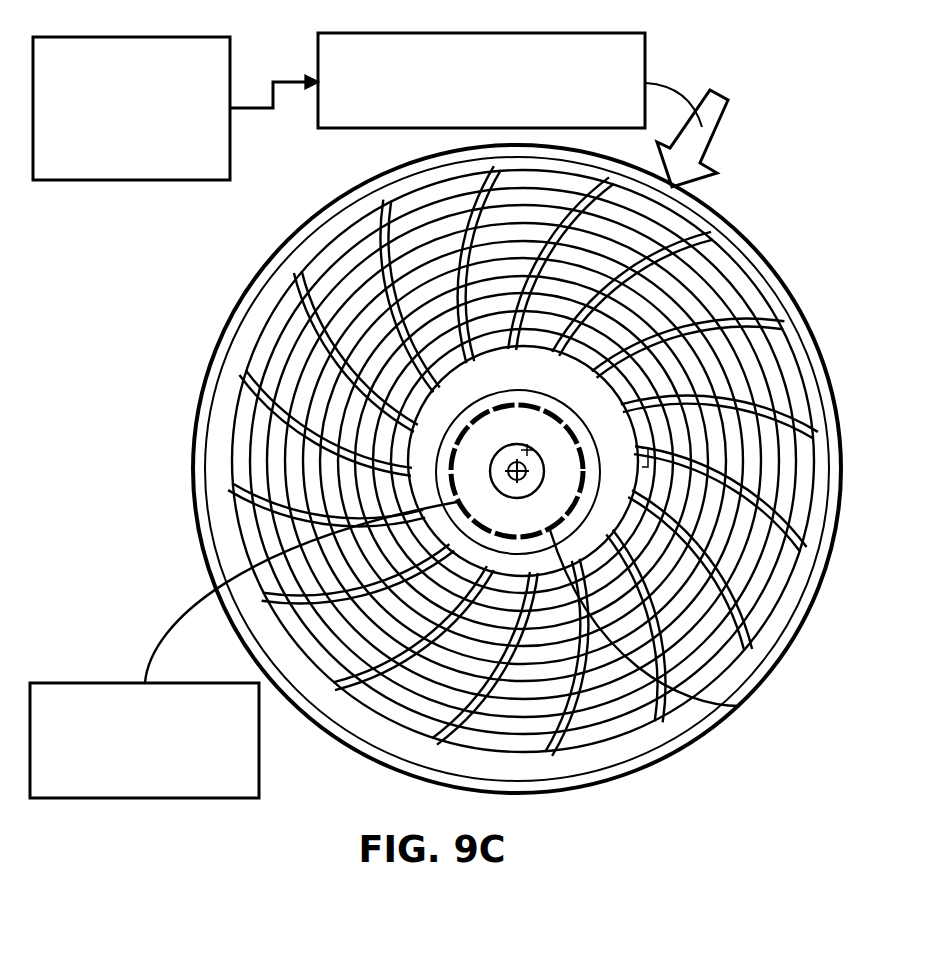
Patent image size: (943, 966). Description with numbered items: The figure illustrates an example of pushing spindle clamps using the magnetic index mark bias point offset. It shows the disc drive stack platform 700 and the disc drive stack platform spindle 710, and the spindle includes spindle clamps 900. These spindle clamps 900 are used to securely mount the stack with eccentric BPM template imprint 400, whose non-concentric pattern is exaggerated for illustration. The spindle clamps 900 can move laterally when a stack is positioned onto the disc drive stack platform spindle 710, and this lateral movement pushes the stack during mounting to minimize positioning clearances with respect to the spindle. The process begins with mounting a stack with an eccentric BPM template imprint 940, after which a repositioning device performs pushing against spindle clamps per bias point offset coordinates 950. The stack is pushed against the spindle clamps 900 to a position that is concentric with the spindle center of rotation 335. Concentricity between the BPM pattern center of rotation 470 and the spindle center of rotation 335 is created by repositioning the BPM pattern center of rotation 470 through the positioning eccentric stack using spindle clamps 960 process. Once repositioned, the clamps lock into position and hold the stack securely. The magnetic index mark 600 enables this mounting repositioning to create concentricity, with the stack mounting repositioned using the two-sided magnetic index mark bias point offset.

The spindle center of rotation 335 is at (517, 471).
The stack with eccentric BPM template imprint 400 is at (225, 343).
The BPM pattern center of rotation 470 is at (527, 450).
The magnetic index mark 600 is at (810, 605).
The disc drive stack platform 700 is at (250, 285).
The disc drive stack platform spindle 710 is at (250, 462).
The spindle clamps 900 is at (740, 706).
The mounting a stack with an eccentric BPM template imprint 940 is at (215, 152).
The pushing against spindle clamps per bias point offset coordinates 950 is at (644, 60).
The positioning eccentric stack using spindle clamps 960 is at (42, 698).